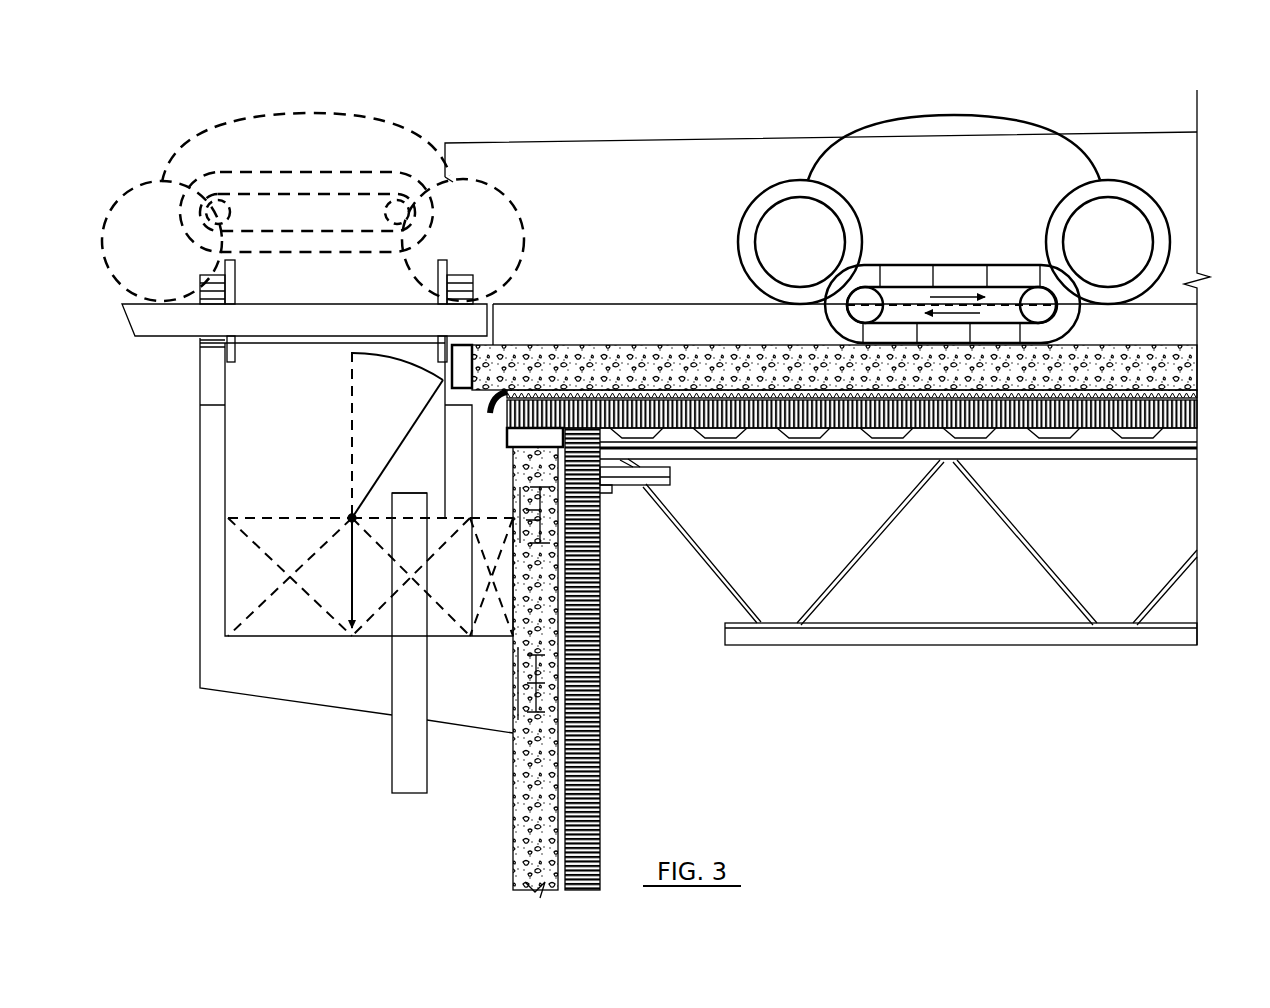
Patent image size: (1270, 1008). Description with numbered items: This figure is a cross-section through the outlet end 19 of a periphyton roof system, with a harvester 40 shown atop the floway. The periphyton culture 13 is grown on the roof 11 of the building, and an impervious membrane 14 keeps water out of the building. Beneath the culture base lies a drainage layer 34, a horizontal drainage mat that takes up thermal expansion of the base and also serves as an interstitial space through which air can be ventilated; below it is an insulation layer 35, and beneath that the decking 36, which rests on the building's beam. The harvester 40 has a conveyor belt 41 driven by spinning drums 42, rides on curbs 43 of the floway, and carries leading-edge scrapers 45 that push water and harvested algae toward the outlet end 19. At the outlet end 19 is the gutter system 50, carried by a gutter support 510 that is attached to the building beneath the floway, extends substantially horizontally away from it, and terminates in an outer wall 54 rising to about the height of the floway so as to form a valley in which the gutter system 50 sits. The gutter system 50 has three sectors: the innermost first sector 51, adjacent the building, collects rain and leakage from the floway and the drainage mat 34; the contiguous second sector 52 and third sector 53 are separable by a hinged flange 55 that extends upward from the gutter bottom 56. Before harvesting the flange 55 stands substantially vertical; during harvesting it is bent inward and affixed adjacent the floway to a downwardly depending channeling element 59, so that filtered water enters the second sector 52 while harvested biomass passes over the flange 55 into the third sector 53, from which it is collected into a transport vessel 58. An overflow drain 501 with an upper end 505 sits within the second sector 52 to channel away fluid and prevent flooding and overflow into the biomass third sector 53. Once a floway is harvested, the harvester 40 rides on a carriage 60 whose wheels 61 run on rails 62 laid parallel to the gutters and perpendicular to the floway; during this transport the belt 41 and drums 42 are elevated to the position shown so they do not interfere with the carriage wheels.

The roof 11 is at (1104, 533).
The periphyton culture 13 is at (1120, 392).
The impervious membrane 14 is at (1168, 400).
The outlet end 19 is at (604, 344).
The drainage layer 34 is at (1145, 400).
The insulation layer 35 is at (1180, 390).
The decking 36 is at (1183, 437).
The harvester 40 is at (378, 101).
The conveyor belt 41 is at (320, 192).
The spinning drums 42 is at (377, 217).
The curbs 43 is at (703, 302).
The leading-edge scrapers 45 is at (200, 150).
The gutter system 50 is at (183, 591).
The first innermost sector 51 is at (478, 590).
The second sector 52 is at (517, 673).
The third sector 53 is at (562, 687).
The outer wall 54 is at (222, 497).
The hinged flange 55 is at (407, 432).
The gutter bottom 56 is at (337, 638).
The transport vessel 58 is at (252, 635).
The channeling element 59 is at (443, 419).
The carriage 60 is at (142, 320).
The wheels 61 is at (453, 287).
The rails 62 is at (200, 372).
The overflow drain 501 is at (408, 733).
The upper end 505 is at (410, 493).
The gutter support 510 is at (285, 685).